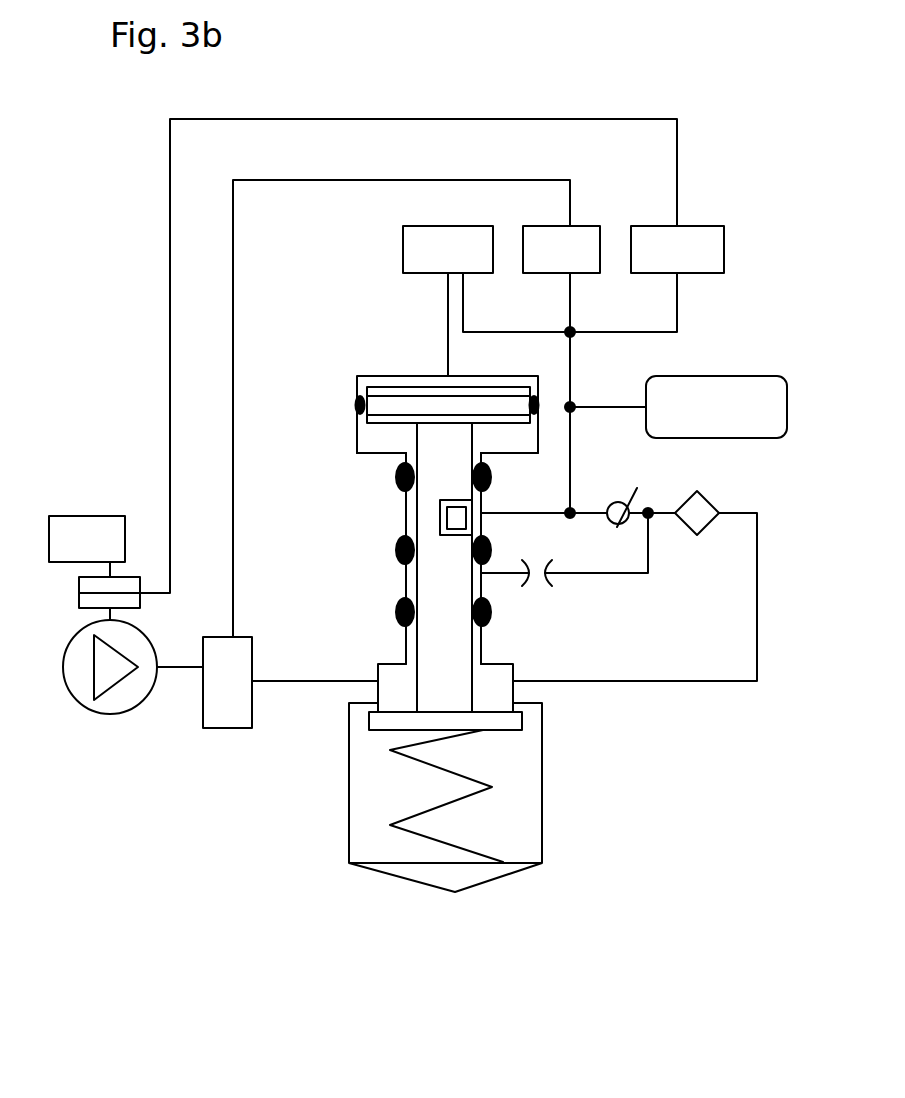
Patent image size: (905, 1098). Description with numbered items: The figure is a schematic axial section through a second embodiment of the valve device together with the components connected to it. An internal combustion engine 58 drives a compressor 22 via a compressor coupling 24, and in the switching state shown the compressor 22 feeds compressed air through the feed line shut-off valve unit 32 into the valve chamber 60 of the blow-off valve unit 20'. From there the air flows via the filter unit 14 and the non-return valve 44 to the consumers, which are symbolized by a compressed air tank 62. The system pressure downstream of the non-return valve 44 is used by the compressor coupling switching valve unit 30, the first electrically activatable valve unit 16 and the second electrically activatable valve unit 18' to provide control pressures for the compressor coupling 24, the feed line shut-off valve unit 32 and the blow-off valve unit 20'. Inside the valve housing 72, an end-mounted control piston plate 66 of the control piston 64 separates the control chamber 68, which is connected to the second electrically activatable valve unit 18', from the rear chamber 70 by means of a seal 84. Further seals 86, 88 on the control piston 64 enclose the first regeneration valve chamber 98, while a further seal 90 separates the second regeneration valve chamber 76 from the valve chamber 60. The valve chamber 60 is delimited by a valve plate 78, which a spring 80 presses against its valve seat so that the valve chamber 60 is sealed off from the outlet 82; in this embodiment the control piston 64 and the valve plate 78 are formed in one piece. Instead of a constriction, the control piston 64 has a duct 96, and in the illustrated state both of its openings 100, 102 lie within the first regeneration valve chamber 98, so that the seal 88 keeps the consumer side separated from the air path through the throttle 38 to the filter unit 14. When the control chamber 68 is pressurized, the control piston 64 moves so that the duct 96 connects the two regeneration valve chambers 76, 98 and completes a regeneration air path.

The filter unit 14 is at (707, 525).
The first electrically activatable valve unit 16 is at (583, 227).
The second electrically activatable valve unit 18' is at (411, 249).
The blow-off valve unit 20' is at (298, 531).
The compressor 22 is at (100, 717).
The compressor coupling 24 is at (78, 602).
The compressor coupling switching valve unit 30 is at (724, 248).
The feed line shut-off valve unit 32 is at (220, 728).
The throttle 38 is at (538, 582).
The non-return valve 44 is at (633, 492).
The internal combustion engine 58 is at (49, 539).
The valve chamber 60 is at (500, 690).
The compressed air tank 62 is at (725, 373).
The control piston 64 is at (463, 440).
The control piston plate 66 is at (377, 427).
The control chamber 68 is at (365, 386).
The rear chamber 70 is at (372, 455).
The valve housing 72 is at (483, 375).
The second regeneration valve chamber 76 is at (410, 580).
The valve plate 78 is at (370, 728).
The spring 80 is at (403, 822).
The outlet 82 is at (497, 877).
The seal 84 is at (357, 405).
The seal 86 is at (480, 488).
The seal 88 is at (492, 544).
The seal 90 is at (487, 620).
The duct 96 is at (440, 514).
The first regeneration valve chamber 98 is at (417, 525).
The opening 100 is at (477, 501).
The opening 102 is at (473, 537).